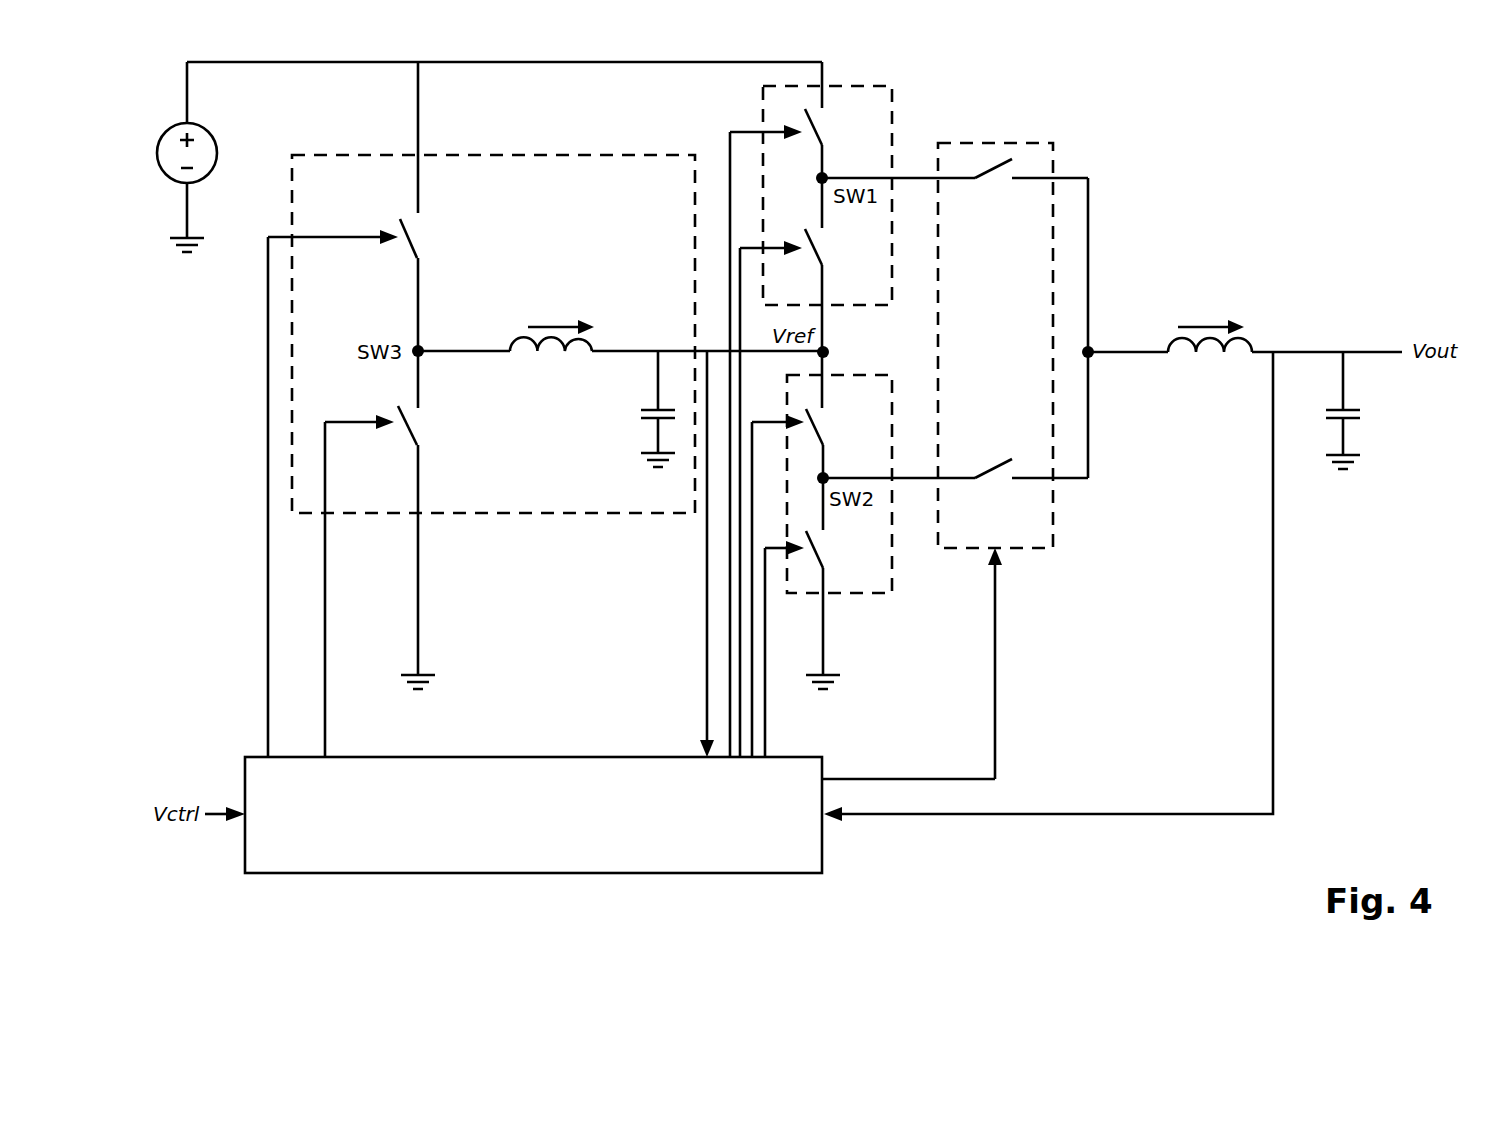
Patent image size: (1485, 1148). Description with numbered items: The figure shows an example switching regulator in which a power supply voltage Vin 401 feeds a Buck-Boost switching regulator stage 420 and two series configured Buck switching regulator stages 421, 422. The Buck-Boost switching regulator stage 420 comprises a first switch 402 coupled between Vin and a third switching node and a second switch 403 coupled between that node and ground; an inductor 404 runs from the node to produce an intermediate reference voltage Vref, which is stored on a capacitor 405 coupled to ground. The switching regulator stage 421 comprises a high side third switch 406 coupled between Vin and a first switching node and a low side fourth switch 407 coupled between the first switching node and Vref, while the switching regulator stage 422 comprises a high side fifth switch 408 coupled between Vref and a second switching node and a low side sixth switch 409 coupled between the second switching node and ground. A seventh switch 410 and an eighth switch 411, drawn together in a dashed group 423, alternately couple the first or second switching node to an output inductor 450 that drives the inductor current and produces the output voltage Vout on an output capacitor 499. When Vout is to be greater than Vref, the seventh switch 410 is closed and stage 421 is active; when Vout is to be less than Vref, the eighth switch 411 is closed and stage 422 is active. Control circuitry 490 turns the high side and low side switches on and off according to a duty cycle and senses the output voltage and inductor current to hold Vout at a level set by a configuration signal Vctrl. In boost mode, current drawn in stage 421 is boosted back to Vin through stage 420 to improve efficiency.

The power supply voltage Vin 401 is at (163, 157).
The switch S1 402 is at (367, 485).
The switch S2 403 is at (396, 579).
The inductor L2 404 is at (620, 351).
The capacitor C 405 is at (638, 409).
The switch S3 406 is at (800, 431).
The switch S4 407 is at (805, 493).
The switch S5 408 is at (811, 583).
The switch S6 409 is at (818, 643).
The switch S7 410 is at (955, 195).
The switch S8 411 is at (955, 496).
The Buck-Boost switching regulator stage 420 is at (290, 163).
The switching regulator stage 421 is at (763, 92).
The switching regulator stage 422 is at (892, 582).
The output switch pair 423 is at (938, 318).
The inductor 450 is at (1245, 352).
The control circuitry 490 is at (600, 815).
The capacitor Cout 499 is at (1367, 410).